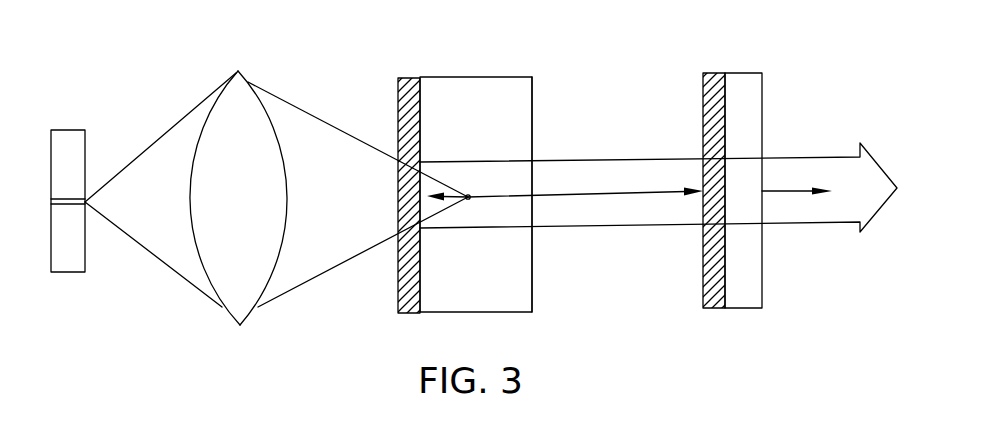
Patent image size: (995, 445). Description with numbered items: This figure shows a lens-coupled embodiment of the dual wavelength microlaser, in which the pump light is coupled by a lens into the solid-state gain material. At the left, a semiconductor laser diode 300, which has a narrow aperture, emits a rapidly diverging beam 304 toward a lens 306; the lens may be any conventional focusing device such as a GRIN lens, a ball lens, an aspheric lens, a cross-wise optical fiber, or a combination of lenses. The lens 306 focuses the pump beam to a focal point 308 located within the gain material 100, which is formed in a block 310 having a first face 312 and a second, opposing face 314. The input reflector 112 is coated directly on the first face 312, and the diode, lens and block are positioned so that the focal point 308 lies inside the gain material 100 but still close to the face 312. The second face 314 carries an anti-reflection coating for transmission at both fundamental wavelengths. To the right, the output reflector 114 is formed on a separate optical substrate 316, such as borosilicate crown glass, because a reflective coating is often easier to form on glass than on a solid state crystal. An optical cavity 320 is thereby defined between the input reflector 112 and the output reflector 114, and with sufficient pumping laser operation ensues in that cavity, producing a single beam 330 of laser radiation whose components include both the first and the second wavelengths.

The semiconductor laser diode 300 is at (74, 133).
The rapidly diverging beam 304 is at (276, 190).
The lens 306 is at (243, 80).
The first face 312 is at (373, 162).
The input reflector 112 is at (398, 102).
The block 310 is at (522, 162).
The second face 314 is at (532, 107).
The focal point 308 is at (469, 192).
The solid-state gain material 100 is at (508, 162).
The optical cavity 320 is at (619, 226).
The optical substrate 316 is at (745, 78).
The output reflector 114 is at (703, 117).
The single beam of laser radiation 330 is at (793, 189).